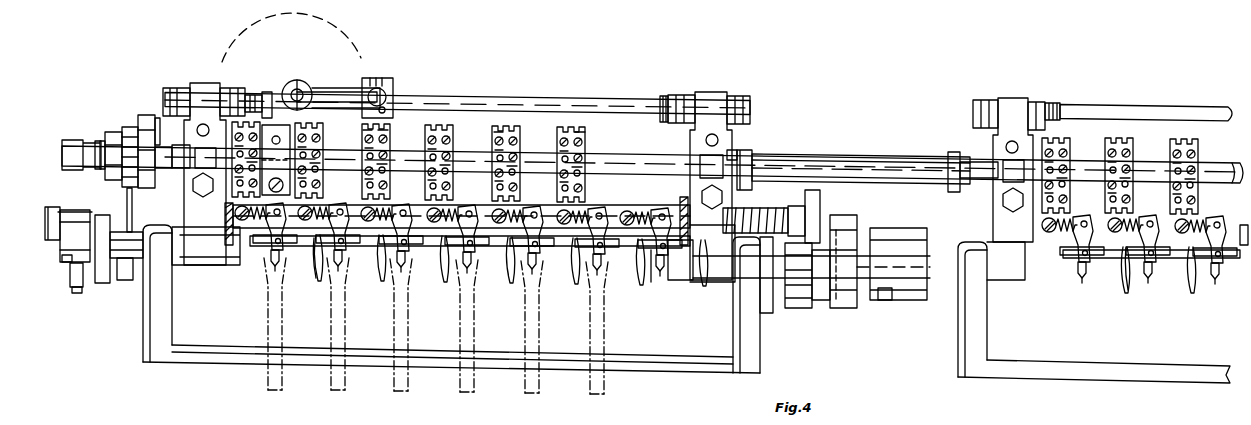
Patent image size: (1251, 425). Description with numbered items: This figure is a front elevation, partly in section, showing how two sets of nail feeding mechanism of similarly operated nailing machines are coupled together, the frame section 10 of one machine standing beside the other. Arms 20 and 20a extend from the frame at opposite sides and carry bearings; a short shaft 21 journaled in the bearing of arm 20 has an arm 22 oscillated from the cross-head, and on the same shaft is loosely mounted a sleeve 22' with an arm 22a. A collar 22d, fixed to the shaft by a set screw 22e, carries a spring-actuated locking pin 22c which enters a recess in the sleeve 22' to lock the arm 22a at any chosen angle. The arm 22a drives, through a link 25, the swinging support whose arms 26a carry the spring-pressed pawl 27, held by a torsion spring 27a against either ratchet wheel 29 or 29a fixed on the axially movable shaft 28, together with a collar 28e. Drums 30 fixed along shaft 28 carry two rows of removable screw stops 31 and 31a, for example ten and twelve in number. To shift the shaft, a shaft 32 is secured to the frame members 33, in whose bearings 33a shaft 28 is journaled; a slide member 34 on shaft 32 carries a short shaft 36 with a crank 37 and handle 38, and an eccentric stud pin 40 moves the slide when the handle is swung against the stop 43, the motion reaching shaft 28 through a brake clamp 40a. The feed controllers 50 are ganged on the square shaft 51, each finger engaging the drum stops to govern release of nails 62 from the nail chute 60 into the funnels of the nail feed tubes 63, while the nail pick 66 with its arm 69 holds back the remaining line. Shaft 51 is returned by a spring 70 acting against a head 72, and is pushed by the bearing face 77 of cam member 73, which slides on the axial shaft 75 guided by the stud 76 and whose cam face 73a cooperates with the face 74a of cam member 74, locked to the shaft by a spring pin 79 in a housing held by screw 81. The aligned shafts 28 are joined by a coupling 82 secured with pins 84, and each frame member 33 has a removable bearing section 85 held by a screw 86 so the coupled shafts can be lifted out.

The frame section 10 is at (1028, 228).
The arm 20 is at (143, 329).
The arm 20a is at (758, 340).
The short shaft 21 is at (66, 260).
The arm 22 is at (396, 235).
The sleeve 22' is at (126, 268).
The arm 22a is at (102, 285).
The spring-actuated locking pin 22c is at (52, 212).
The collar 22d is at (80, 210).
The set screw 22e is at (76, 289).
The link 25 is at (126, 197).
The arms of swinging support 26a is at (110, 138).
The spring-pressed pawl 27 is at (130, 125).
The torsion spring 27a is at (157, 115).
The shaft 28 is at (68, 145).
The collar 28e is at (96, 143).
The ratchet wheel 29 is at (142, 122).
The ratchet wheel 29a is at (148, 188).
The drum 30 is at (323, 140).
The stops 31 is at (366, 125).
The stops 31a is at (385, 127).
The shaft 32 is at (605, 99).
The frame members 33 is at (204, 88).
The bearings 33a is at (735, 150).
The slide member 34 is at (270, 95).
The short shaft 36 is at (296, 85).
The crank 37 is at (340, 90).
The operating handle 38 is at (392, 98).
The stud pin 40 is at (315, 92).
The clamp 40a is at (276, 160).
The stop 43 is at (258, 100).
The feed controller 50 is at (338, 205).
The square shaft 51 is at (728, 215).
The nail chute 60 is at (258, 248).
The nails 62 is at (313, 262).
The nail feed tubes 63 is at (325, 310).
The nail pick 66 is at (640, 258).
The arm 69 is at (653, 272).
The spring 70 is at (757, 212).
The head 72 is at (797, 212).
The cam member 73 is at (835, 305).
The cam face 73a is at (832, 305).
The cam member 74 is at (855, 225).
The cam face 74a is at (840, 303).
The axial shaft 75 is at (905, 270).
The stud 76 is at (770, 313).
The bearing face 77 is at (818, 198).
The spring actuated pin 79 is at (918, 228).
The screw 81 is at (888, 296).
The coupling 82 is at (835, 158).
The pins 84 is at (750, 158).
The removable bearing section 85 is at (192, 176).
The screw 86 is at (197, 130).